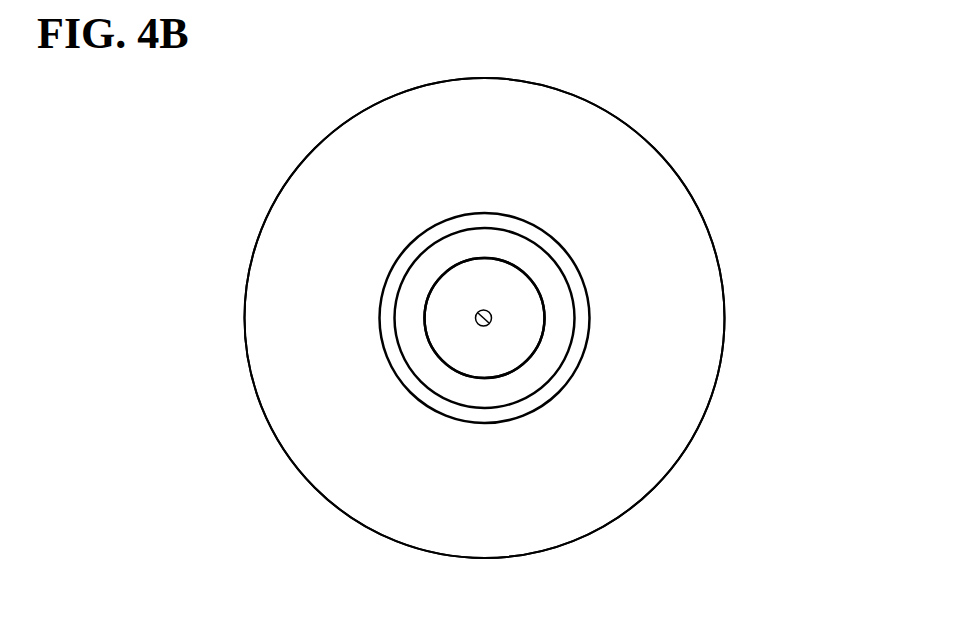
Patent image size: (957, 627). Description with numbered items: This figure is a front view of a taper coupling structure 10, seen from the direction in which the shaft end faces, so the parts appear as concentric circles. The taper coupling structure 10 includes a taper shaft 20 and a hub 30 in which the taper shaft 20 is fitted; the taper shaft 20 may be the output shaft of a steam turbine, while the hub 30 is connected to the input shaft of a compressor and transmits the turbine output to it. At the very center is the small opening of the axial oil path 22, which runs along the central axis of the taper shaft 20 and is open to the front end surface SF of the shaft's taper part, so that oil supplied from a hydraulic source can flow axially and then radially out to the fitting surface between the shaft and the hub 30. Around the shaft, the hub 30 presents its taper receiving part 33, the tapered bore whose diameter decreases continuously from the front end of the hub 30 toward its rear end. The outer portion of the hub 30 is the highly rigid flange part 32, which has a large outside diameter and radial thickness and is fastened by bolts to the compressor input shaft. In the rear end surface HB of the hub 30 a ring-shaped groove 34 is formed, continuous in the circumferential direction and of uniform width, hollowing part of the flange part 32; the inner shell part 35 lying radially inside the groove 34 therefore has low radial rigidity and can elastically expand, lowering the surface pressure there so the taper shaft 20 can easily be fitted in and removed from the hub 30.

The taper coupling structure 10 is at (657, 121).
The taper shaft 20 is at (426, 311).
The axial oil path 22 is at (472, 315).
The hub 30 is at (685, 181).
The flange part 32 is at (715, 248).
The taper receiving part 33 is at (545, 329).
The ring-shaped groove 34 is at (584, 351).
The inner shell part 35 is at (542, 360).
The front end surface SF is at (443, 337).
The rear end surface HB is at (652, 418).